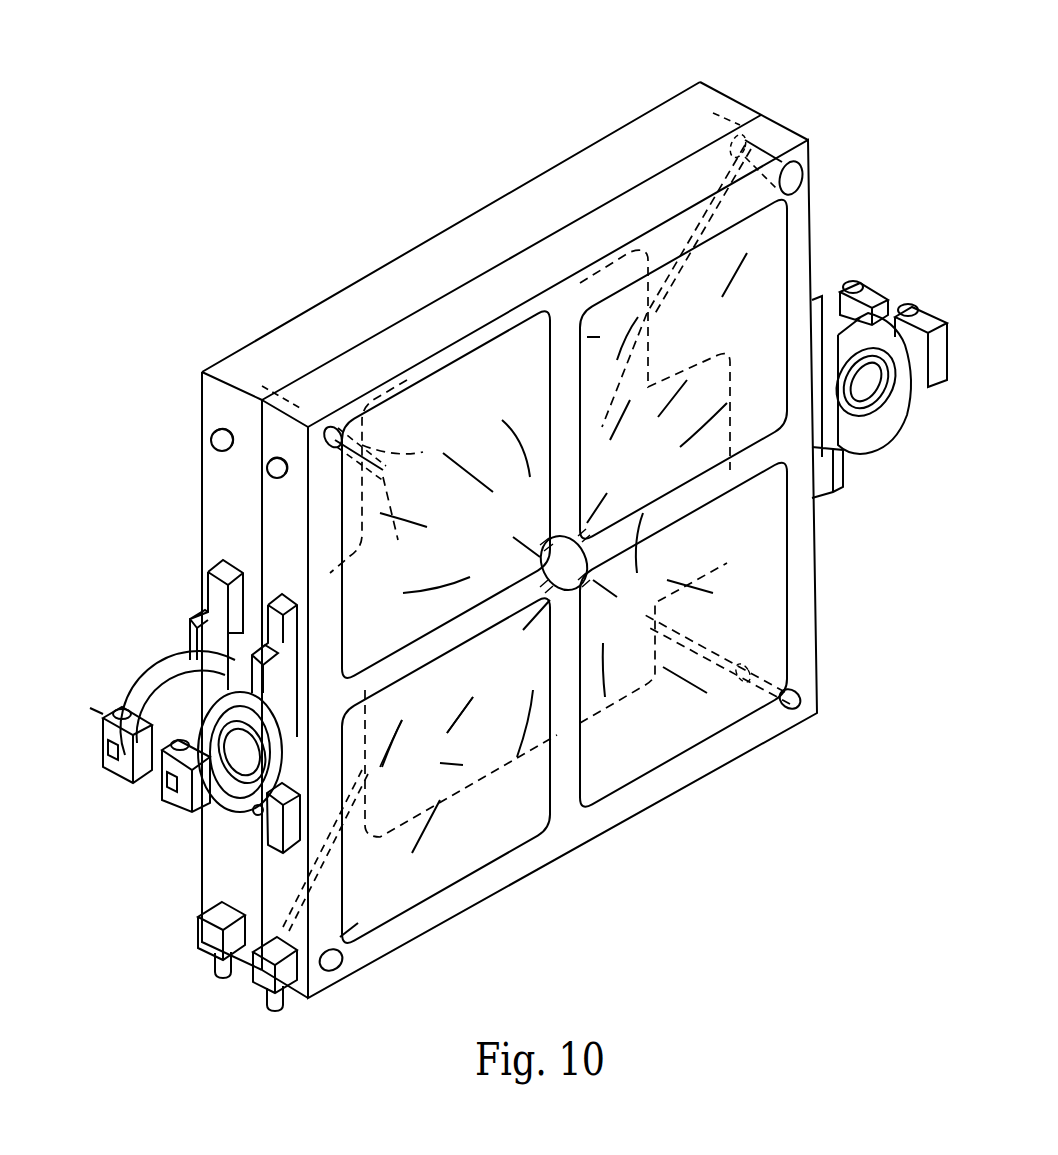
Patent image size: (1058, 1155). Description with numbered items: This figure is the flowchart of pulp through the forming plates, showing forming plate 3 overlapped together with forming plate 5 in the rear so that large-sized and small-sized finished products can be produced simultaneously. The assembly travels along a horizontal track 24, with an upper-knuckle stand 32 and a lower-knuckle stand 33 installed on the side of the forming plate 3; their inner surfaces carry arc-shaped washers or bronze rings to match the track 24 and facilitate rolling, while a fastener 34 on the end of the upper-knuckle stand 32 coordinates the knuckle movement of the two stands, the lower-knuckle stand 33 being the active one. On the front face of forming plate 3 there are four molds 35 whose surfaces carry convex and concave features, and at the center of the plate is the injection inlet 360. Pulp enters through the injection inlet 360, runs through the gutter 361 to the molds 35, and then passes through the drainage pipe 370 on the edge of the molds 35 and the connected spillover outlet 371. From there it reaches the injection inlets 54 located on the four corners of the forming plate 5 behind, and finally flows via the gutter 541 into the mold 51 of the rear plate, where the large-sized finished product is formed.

The forming plate 3 is at (775, 133).
The forming plate 5 is at (703, 96).
The track 24 is at (153, 668).
The upper-knuckle stand 32 is at (162, 677).
The lower-knuckle stand 33 is at (870, 432).
The fastener 34 is at (178, 798).
The mold 35 is at (768, 606).
The mold 51 is at (432, 792).
The injection inlet 54 is at (806, 145).
The gutter 541 is at (690, 247).
The injection inlet 360 is at (570, 593).
The gutter 361 is at (540, 618).
The drainage pipe 370 is at (782, 710).
The spillover outlet 371 is at (807, 713).